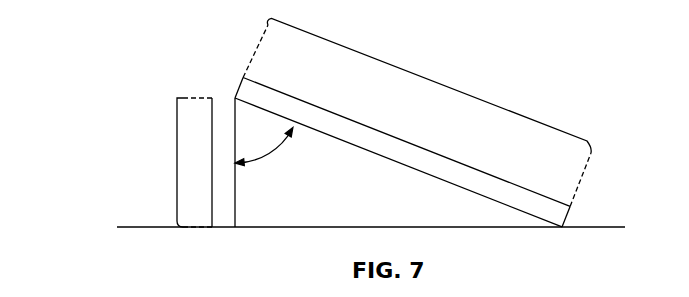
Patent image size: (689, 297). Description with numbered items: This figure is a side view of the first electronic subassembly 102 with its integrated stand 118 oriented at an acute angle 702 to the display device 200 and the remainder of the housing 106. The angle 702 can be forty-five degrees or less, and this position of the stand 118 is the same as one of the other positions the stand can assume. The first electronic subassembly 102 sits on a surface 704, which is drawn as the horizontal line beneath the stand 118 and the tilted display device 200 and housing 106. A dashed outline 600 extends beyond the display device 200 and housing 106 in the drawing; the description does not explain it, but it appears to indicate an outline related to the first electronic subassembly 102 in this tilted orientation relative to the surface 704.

The first electronic subassembly 102 is at (439, 111).
The housing 106 is at (530, 206).
The stand 118 is at (175, 159).
The display device 200 is at (402, 169).
The outline of raised panel position 600 is at (440, 88).
The acute angle 702 is at (271, 160).
The surface 704 is at (598, 222).